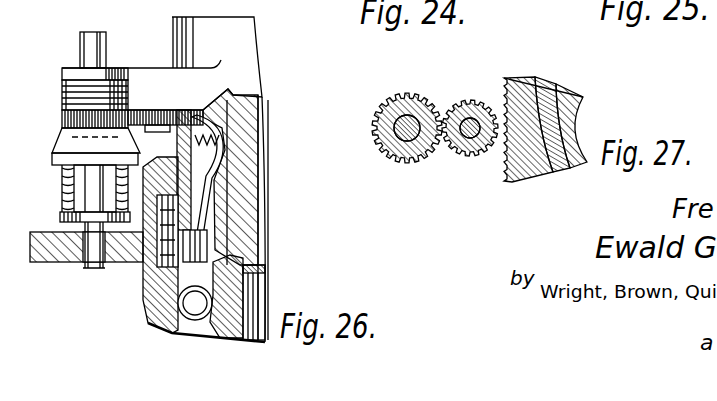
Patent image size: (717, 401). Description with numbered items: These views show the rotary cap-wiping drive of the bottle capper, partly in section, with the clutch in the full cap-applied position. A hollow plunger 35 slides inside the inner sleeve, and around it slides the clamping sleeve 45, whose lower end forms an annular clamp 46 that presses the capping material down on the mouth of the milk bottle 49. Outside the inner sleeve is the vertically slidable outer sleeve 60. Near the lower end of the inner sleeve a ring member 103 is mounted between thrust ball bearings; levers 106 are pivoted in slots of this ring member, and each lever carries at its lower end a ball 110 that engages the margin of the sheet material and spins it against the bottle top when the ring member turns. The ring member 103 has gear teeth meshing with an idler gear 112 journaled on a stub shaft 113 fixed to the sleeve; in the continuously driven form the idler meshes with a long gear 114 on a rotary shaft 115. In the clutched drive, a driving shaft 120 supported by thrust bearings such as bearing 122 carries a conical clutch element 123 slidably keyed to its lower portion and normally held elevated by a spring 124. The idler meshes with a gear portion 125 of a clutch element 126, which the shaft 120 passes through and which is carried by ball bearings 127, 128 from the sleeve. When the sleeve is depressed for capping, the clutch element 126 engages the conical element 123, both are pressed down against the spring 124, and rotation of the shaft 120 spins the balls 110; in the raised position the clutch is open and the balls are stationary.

In FIG. 26, the driving shaft 120 is at (80, 40).
In FIG. 26, the ball bearing 128 is at (62, 70).
In FIG. 26, the ball bearing 127 is at (62, 100).
In FIG. 26, the gear portion 125 is at (62, 126).
In FIG. 26, the clutch element 126 is at (68, 150).
In FIG. 26, the conical clutch element 123 is at (62, 200).
In FIG. 26, the spring 124 is at (77, 229).
In FIG. 26, the thrust bearing 122 is at (123, 233).
In FIG. 26, the idler gear 112 is at (160, 110).
In FIG. 27, the idler gear 112 is at (461, 153).
In FIG. 26, the plunger 35 is at (250, 158).
In FIG. 27, the plunger 35 is at (571, 121).
In FIG. 26, the annular clamp 46 is at (230, 247).
In FIG. 26, the milk bottle 49 is at (235, 292).
In FIG. 26, the sleeve 60 is at (145, 308).
In FIG. 26, the lever 106 is at (158, 327).
In FIG. 26, the ball 110 is at (200, 325).
In FIG. 27, the long gear 114 is at (395, 94).
In FIG. 27, the rotary shaft 115 is at (375, 128).
In FIG. 27, the stub shaft 113 is at (473, 100).
In FIG. 27, the ring member 103 is at (533, 90).
In FIG. 27, the sleeve 45 is at (563, 100).